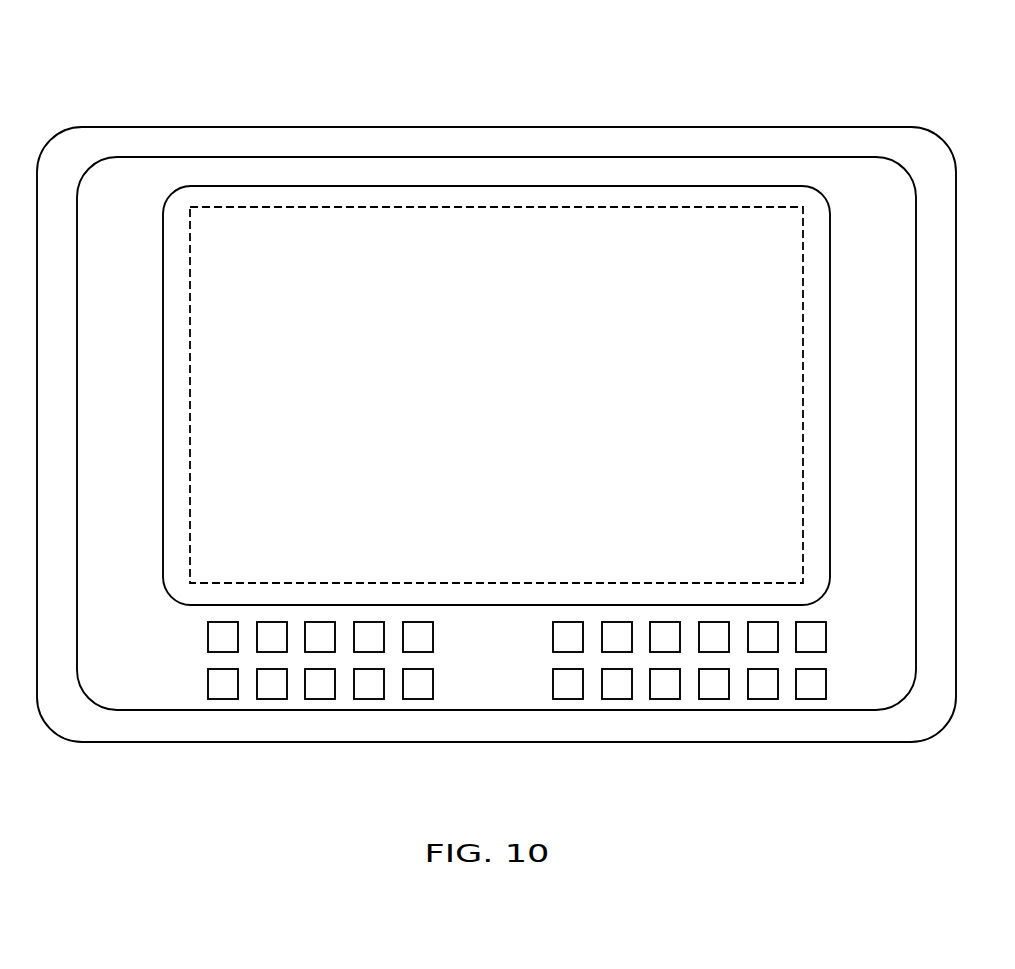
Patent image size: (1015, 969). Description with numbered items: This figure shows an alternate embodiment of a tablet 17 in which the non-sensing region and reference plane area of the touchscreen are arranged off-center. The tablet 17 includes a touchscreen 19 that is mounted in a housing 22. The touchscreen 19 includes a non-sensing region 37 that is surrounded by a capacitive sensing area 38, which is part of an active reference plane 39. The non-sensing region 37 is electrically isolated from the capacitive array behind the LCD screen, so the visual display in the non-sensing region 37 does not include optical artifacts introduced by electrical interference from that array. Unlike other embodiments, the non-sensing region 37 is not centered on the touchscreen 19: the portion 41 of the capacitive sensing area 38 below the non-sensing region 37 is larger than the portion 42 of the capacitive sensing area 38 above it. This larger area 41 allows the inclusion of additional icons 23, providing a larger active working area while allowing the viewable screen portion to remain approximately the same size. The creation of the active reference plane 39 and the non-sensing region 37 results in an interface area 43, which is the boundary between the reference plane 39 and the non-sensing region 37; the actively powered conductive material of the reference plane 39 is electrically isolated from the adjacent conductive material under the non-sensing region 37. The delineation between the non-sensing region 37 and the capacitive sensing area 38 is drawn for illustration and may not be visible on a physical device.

The tablet 17 is at (828, 118).
The touchscreen 19 is at (902, 533).
The housing 22 is at (943, 643).
The additional icons 23 is at (615, 688).
The non-sensing region 37 is at (481, 398).
The capacitive sensing area 38 is at (866, 498).
The active reference plane 39 is at (823, 393).
The portion of capacitive sensing area below the non-sensing region 41 is at (481, 670).
The portion of capacitive sensing area above the non-sensing region 42 is at (567, 170).
The interface area 43 is at (688, 205).